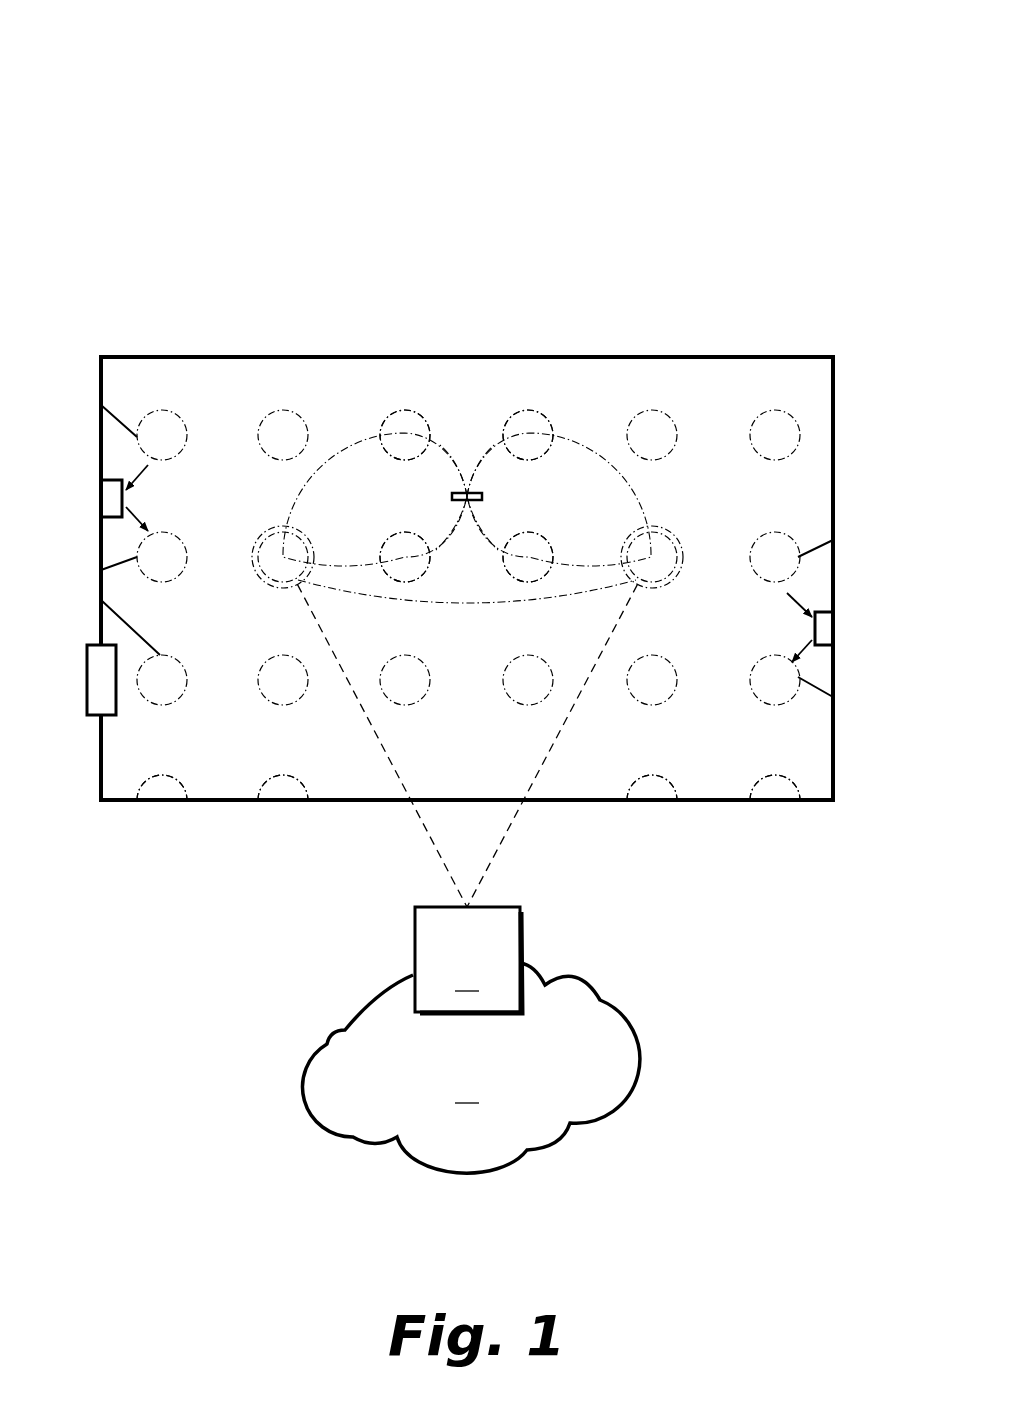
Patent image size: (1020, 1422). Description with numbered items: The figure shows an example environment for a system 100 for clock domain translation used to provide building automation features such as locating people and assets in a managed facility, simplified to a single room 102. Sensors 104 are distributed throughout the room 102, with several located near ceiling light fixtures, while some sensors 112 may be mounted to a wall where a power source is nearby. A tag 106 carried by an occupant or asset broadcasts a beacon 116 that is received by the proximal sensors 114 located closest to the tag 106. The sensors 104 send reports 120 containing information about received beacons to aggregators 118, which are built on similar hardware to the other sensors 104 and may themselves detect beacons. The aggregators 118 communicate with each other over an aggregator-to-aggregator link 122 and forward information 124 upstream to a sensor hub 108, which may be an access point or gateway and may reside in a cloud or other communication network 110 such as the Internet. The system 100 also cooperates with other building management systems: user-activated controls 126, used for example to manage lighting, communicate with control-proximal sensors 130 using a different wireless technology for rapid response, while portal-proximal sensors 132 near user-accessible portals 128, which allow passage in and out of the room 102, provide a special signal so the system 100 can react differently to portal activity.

The system for clock domain translation 100 is at (131, 62).
The room 102 is at (240, 384).
The sensors 104 is at (468, 605).
The tag 106 is at (465, 492).
The sensor hub 108 is at (468, 960).
The communication network 110 is at (471, 1068).
The wall-mounted sensors 112 is at (160, 803).
The proximal sensors 114 is at (404, 410).
The broadcast beacon 116 is at (458, 462).
The aggregators 118 is at (283, 529).
The reports 120 is at (357, 440).
The aggregator-to-aggregator link 122 is at (455, 604).
The information 124 is at (420, 830).
The user-activated controls 126 is at (108, 497).
The user-accessible portals 128 is at (100, 678).
The control-proximal sensors 130 is at (101, 403).
The portal-proximal sensors 132 is at (101, 600).